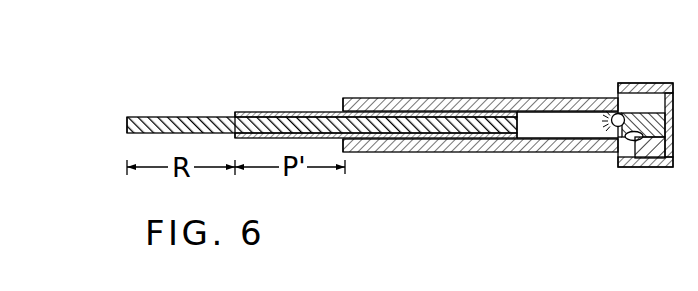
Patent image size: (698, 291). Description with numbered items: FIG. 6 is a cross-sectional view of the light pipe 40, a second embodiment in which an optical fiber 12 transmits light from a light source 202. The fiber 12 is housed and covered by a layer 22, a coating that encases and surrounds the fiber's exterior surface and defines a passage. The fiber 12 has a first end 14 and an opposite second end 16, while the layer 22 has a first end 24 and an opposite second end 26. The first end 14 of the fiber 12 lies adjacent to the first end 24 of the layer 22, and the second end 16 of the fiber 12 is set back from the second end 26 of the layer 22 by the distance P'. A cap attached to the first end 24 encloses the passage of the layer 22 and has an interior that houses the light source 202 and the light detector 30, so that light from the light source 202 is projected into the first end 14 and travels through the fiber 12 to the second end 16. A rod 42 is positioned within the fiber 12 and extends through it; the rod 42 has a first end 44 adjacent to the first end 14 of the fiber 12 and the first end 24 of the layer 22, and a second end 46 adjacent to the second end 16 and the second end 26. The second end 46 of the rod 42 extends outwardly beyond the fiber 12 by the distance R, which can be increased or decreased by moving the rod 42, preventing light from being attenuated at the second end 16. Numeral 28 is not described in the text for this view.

The optical fiber 12 is at (266, 112).
The first end of the fiber 14 is at (492, 98).
The second end of the fiber 16 is at (236, 112).
The layer 22 is at (458, 157).
The first end of the layer 24 is at (560, 97).
The second end of the layer 26 is at (342, 97).
The housing 28 is at (471, 6).
The light detector 30 is at (657, 150).
The light pipe 40 is at (407, 180).
The rod 42 is at (170, 116).
The first end of the rod 44 is at (503, 140).
The second end of the rod 46 is at (127, 123).
The light source 202 is at (655, 113).